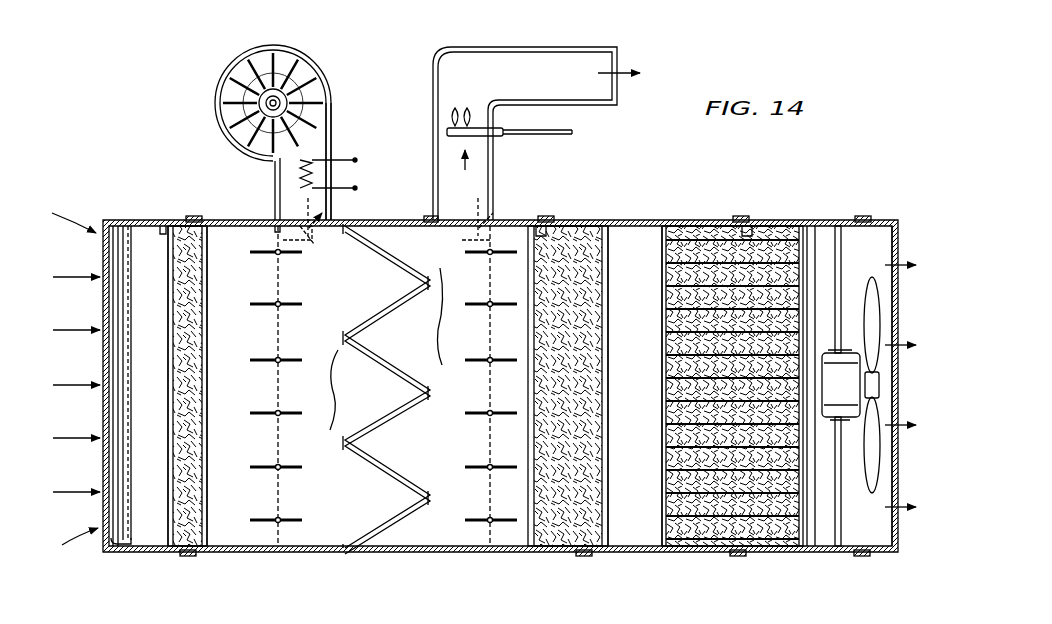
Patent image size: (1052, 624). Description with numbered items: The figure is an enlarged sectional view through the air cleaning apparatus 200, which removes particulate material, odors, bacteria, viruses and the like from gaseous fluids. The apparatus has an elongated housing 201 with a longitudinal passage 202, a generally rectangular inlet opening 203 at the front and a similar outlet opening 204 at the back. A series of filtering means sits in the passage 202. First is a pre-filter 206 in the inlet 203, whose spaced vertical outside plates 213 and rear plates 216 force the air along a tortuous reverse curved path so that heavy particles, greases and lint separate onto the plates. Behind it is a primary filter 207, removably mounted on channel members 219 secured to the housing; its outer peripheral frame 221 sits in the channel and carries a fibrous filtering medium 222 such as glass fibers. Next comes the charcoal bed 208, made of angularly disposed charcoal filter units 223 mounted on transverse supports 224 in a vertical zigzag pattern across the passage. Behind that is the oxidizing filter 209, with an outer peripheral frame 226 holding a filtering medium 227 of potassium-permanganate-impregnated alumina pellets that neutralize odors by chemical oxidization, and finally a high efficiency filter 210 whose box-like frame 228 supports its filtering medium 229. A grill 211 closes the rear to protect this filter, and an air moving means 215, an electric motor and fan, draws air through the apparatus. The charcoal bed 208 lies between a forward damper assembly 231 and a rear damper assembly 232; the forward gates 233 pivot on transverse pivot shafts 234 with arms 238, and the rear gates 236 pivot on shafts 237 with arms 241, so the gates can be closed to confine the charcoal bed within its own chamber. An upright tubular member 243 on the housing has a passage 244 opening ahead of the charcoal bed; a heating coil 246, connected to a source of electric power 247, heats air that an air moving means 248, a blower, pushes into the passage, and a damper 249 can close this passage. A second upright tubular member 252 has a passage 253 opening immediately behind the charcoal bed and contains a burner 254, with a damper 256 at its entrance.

The air cleaning apparatus 200 is at (170, 36).
The housing 201 is at (641, 220).
The longitudinal passage 202 is at (650, 494).
The inlet opening 203 is at (112, 357).
The outlet opening 204 is at (888, 240).
The pre-filter 206 is at (120, 551).
The primary filter 207 is at (203, 553).
The charcoal bed 208 is at (380, 405).
The oxidizing filter 209 is at (588, 389).
The high efficiency filter 210 is at (709, 380).
The grill 211 is at (856, 386).
The outside plates 213 is at (112, 300).
The air moving means 215 is at (841, 386).
The rear plates 216 is at (127, 312).
The channel members 219 is at (164, 222).
The outer peripheral frame 221 is at (172, 482).
The filtering medium 222 is at (188, 407).
The charcoal filter units 223 is at (390, 258).
The transverse supports 224 is at (438, 312).
The outer peripheral frame 226 is at (543, 226).
The filtering medium 227 is at (590, 383).
The box-like frame 228 is at (748, 222).
The filtering medium 229 is at (666, 320).
The forward damper assembly 231 is at (263, 406).
The rear damper assembly 232 is at (477, 406).
The gates 233 is at (262, 386).
The transverse pivot shaft 234 is at (273, 372).
The gates 236 is at (486, 468).
The transverse pivot shaft 237 is at (488, 292).
The arms 238 is at (324, 241).
The arms 241 is at (494, 212).
The upright tubular member 243 is at (333, 207).
The passage 244 is at (275, 207).
The heating coil 246 is at (315, 174).
The source of electric power 247 is at (357, 186).
The air moving means 248 is at (217, 91).
The damper 249 is at (283, 240).
The second upright tubular member 252 is at (494, 158).
The passage 253 is at (512, 148).
The burner 254 is at (447, 132).
The damper 256 is at (460, 232).